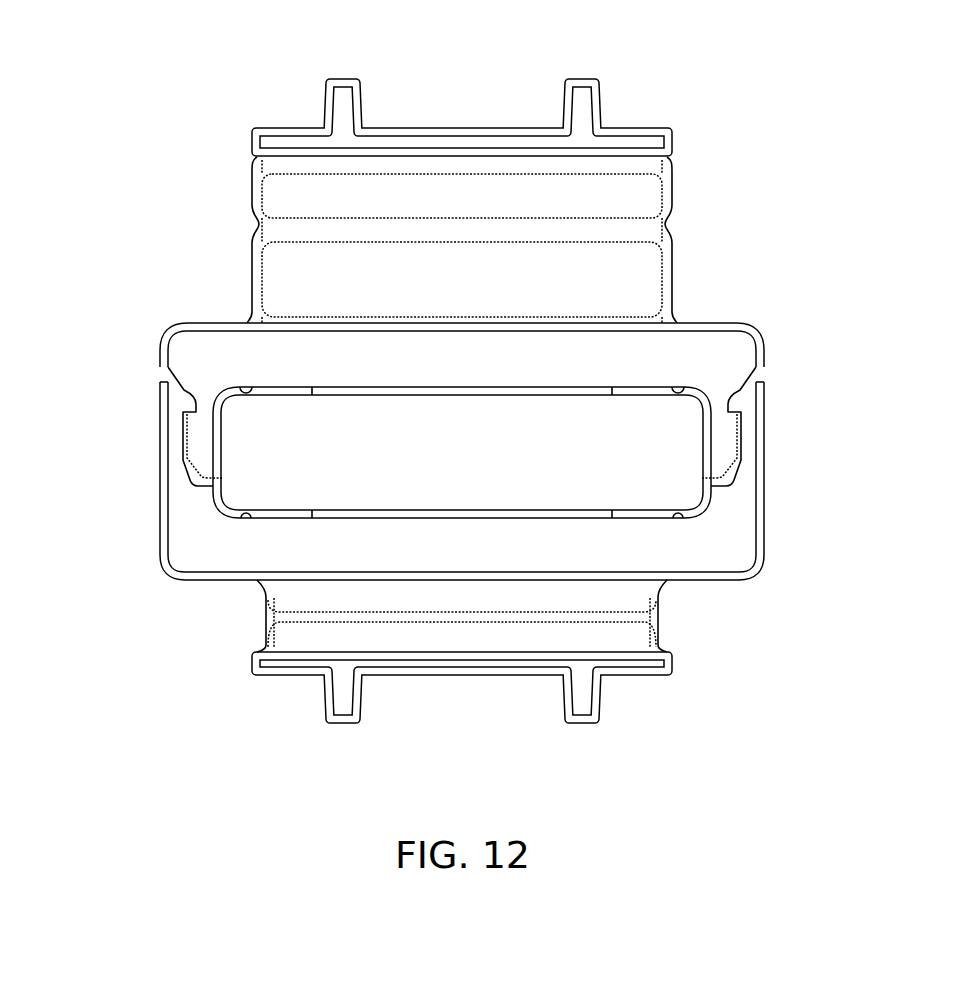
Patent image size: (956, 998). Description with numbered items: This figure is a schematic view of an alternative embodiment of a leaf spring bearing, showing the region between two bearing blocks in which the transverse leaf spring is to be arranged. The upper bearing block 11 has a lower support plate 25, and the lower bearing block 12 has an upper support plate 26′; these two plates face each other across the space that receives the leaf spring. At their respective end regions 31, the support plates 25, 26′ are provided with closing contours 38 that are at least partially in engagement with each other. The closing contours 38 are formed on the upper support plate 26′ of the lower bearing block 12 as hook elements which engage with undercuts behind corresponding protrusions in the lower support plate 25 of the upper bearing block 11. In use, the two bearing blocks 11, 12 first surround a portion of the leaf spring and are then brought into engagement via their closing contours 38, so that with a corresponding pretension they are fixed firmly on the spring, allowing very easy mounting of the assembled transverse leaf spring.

The upper bearing block 11 is at (650, 191).
The lower bearing block 12 is at (647, 595).
The lower support plate 25 is at (714, 351).
The upper support plate 26′ is at (742, 545).
The end regions 31 is at (135, 472).
The closing contours 38 is at (183, 447).